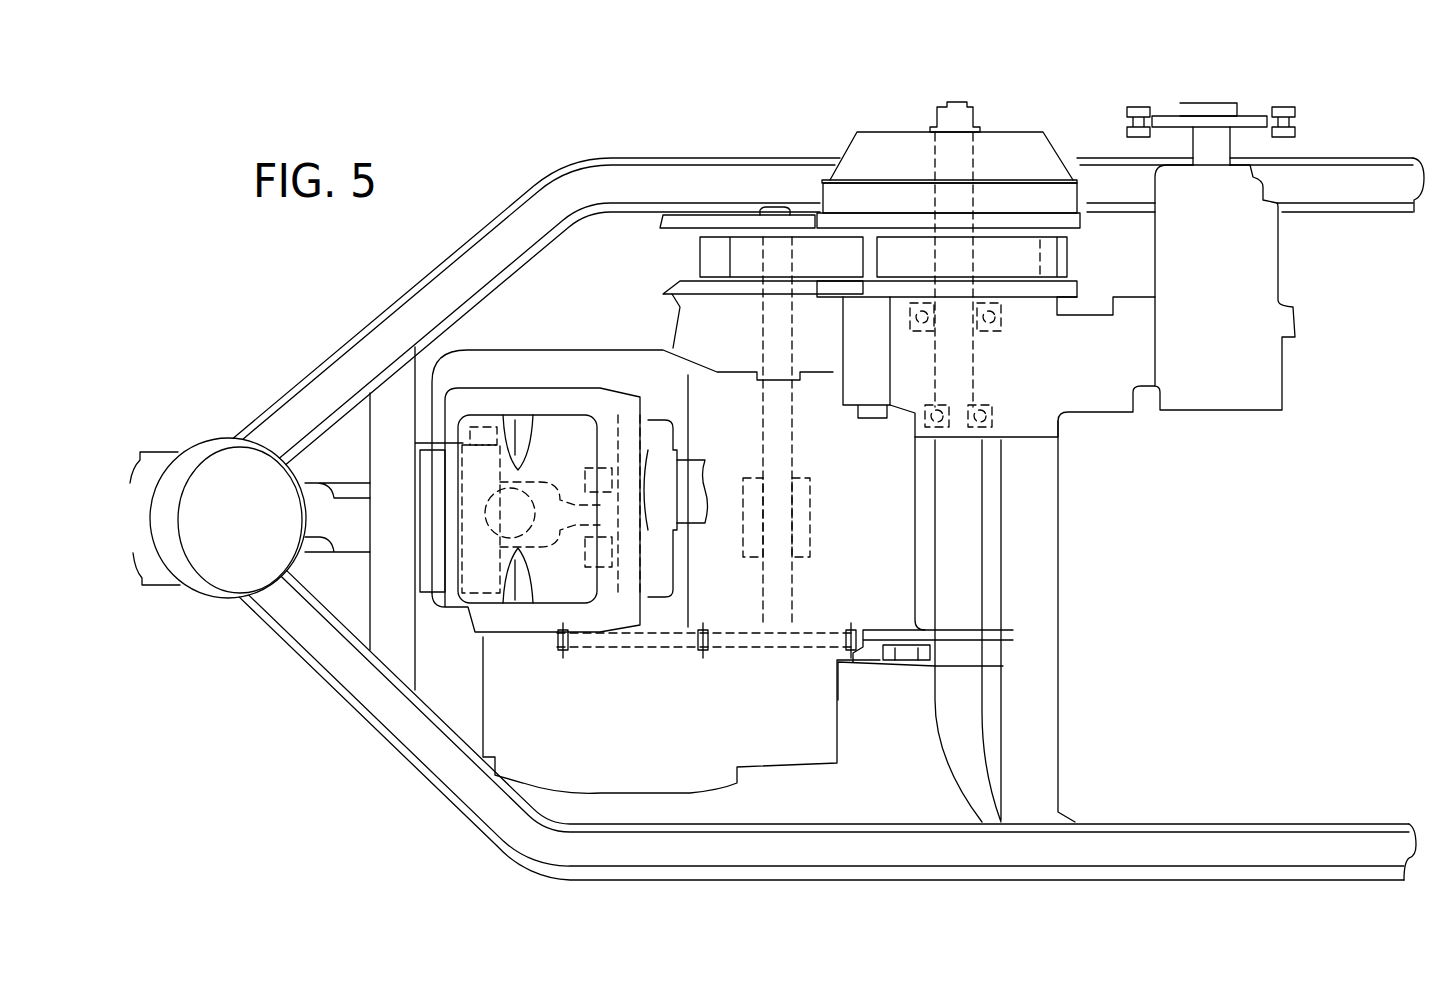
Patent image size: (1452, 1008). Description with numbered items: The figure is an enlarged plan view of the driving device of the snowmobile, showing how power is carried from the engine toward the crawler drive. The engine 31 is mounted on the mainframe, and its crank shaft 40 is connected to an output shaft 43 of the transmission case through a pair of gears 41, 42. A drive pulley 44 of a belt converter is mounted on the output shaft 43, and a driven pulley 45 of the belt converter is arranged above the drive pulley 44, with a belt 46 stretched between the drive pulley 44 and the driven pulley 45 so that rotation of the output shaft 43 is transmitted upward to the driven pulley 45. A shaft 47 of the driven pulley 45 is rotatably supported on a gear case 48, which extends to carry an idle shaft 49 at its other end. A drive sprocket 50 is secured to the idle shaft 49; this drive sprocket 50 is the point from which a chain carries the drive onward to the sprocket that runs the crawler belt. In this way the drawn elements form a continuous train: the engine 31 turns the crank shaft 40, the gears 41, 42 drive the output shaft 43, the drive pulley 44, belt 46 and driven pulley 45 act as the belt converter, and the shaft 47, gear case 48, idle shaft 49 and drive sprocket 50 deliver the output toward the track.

The engine 31 is at (548, 372).
The crank shaft 40 is at (633, 412).
The gear 41 is at (601, 650).
The gear 42 is at (766, 650).
The output shaft 43 is at (795, 600).
The drive pulley 44 is at (715, 218).
The driven pulley 45 is at (892, 232).
The belt 46 is at (807, 255).
The shaft 47 is at (968, 160).
The gear case 48 is at (1122, 400).
The idle shaft 49 is at (1210, 140).
The drive sprocket 50 is at (1165, 121).